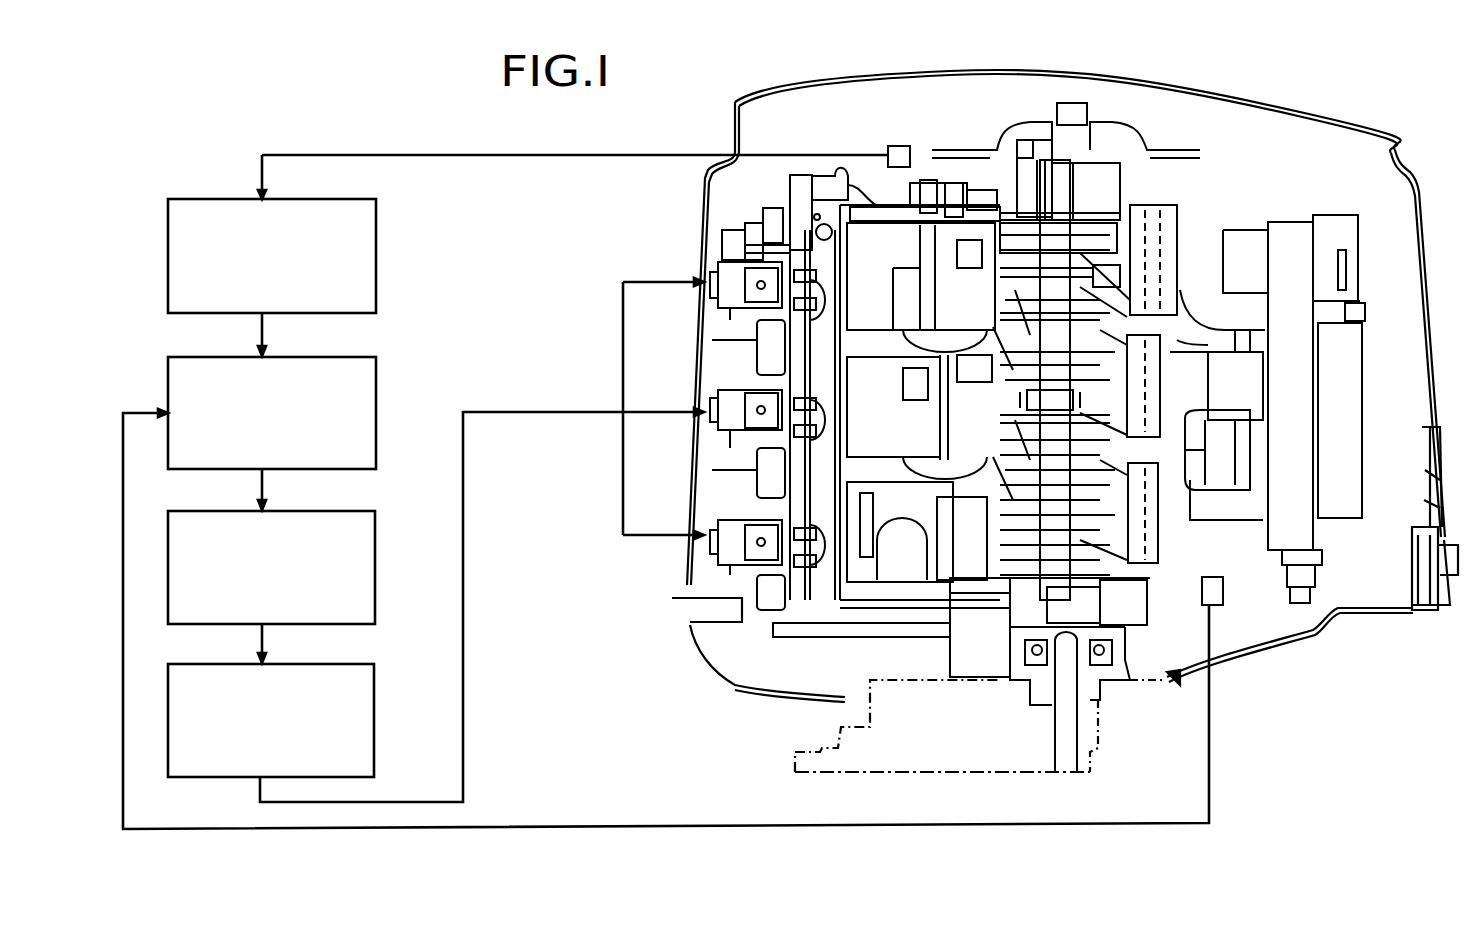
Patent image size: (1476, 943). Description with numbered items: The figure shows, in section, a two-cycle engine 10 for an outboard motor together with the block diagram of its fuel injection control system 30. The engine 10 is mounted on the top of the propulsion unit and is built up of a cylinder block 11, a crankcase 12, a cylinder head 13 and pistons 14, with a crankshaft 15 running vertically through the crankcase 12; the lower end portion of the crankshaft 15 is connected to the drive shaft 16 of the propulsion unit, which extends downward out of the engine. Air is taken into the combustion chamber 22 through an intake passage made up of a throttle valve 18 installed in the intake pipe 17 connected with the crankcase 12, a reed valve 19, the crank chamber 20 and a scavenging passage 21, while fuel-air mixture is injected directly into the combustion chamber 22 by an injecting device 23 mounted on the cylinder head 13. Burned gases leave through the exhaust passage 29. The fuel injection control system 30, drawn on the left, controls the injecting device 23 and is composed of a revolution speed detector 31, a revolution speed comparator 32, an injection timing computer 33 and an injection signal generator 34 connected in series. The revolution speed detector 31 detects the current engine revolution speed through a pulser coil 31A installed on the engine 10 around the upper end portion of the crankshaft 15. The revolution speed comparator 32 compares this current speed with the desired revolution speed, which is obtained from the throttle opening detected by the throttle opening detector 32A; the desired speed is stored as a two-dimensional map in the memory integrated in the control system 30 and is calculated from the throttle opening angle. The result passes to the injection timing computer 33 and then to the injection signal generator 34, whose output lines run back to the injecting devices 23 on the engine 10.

The engine 10 is at (1236, 74).
The cylinder block 11 is at (862, 632).
The crankcase 12 is at (1135, 627).
The cylinder head 13 is at (832, 630).
The pistons 14 is at (893, 630).
The crankshaft 15 is at (1032, 602).
The drive shaft 16 is at (1056, 735).
The intake pipe 17 is at (1216, 480).
The throttle valve 18 is at (1207, 510).
The reed valve 19 is at (1130, 466).
The crank chamber 20 is at (1090, 590).
The scavenging passage 21 is at (988, 600).
The combustion chamber 22 is at (830, 548).
The injecting device 23 is at (720, 545).
The exhaust passage 29 is at (900, 275).
The fuel injection control system 30 is at (236, 176).
The revolution speed detector 31 is at (195, 207).
The pulser coil 31A is at (892, 146).
The revolution speed comparator 32 is at (190, 362).
The throttle opening detector 32A is at (1223, 590).
The injection timing computer 33 is at (190, 517).
The injection signal generator 34 is at (198, 672).